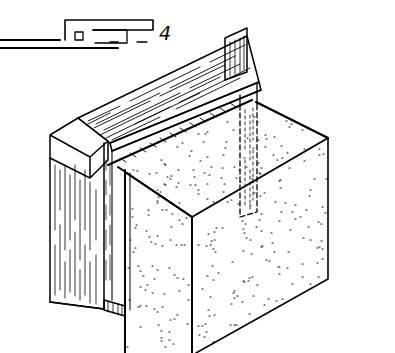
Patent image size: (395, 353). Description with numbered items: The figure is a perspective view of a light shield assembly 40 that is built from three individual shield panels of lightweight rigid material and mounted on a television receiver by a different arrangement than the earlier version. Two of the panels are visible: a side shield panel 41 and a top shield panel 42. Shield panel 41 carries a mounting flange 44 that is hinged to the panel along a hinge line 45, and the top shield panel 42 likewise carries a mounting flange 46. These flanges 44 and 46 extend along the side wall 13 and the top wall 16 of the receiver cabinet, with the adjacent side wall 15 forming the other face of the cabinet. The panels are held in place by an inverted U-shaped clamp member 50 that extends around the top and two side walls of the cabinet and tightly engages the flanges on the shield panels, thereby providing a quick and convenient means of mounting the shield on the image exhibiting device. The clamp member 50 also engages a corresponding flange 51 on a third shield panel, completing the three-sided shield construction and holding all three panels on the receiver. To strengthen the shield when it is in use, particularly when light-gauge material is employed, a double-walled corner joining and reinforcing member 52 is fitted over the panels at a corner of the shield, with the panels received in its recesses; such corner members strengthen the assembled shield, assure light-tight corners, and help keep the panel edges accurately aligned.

The side wall 13 is at (164, 281).
The side face of block 15 is at (312, 243).
The top wall 16 is at (292, 137).
The light shield assembly 40 is at (86, 88).
The shield panel 41 is at (75, 263).
The top shield panel 42 is at (138, 100).
The mounting flange 44 is at (118, 312).
The hinge line 45 is at (106, 303).
The mounting flange 46 is at (147, 153).
The clamp member 50 is at (156, 143).
The flange 51 is at (260, 116).
The corner joining and reinforcing member 52 is at (63, 138).